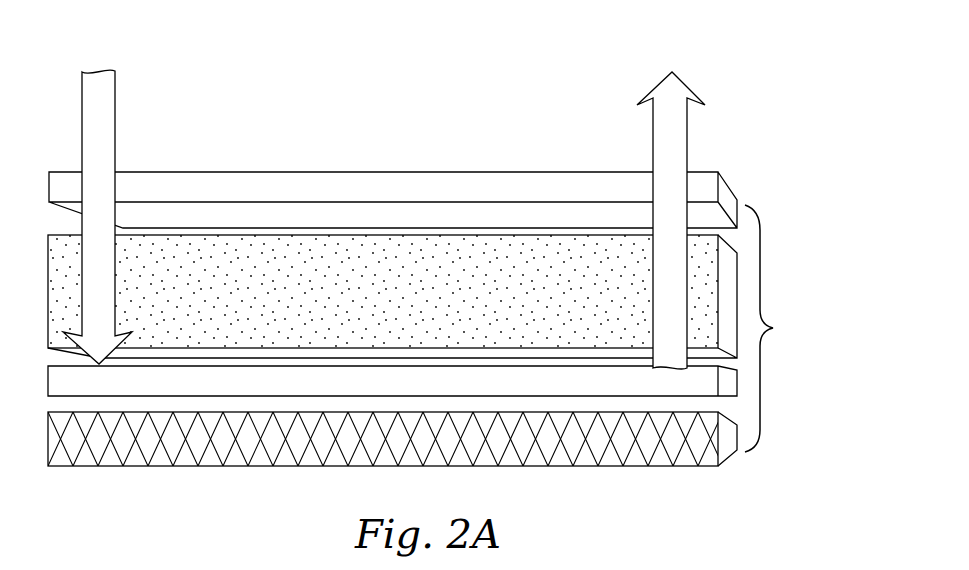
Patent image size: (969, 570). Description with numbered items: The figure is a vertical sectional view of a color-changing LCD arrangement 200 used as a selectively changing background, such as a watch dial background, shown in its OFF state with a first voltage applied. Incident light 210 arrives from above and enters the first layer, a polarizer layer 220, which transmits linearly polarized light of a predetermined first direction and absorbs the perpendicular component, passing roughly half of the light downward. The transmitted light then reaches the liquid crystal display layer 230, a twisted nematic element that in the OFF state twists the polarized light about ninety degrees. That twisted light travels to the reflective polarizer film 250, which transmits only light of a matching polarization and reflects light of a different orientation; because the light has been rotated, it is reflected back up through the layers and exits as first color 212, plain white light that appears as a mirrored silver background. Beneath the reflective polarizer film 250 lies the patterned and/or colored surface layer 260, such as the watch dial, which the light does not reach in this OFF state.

The color-changing LCD arrangement 200 is at (782, 328).
The incident light 210 is at (97, 198).
The first color 212 is at (671, 205).
The polarizer layer 220 is at (402, 199).
The liquid crystal display layer 230 is at (402, 301).
The reflective polarizer film 250 is at (402, 394).
The patterned and/or colored surface layer 260 is at (402, 447).